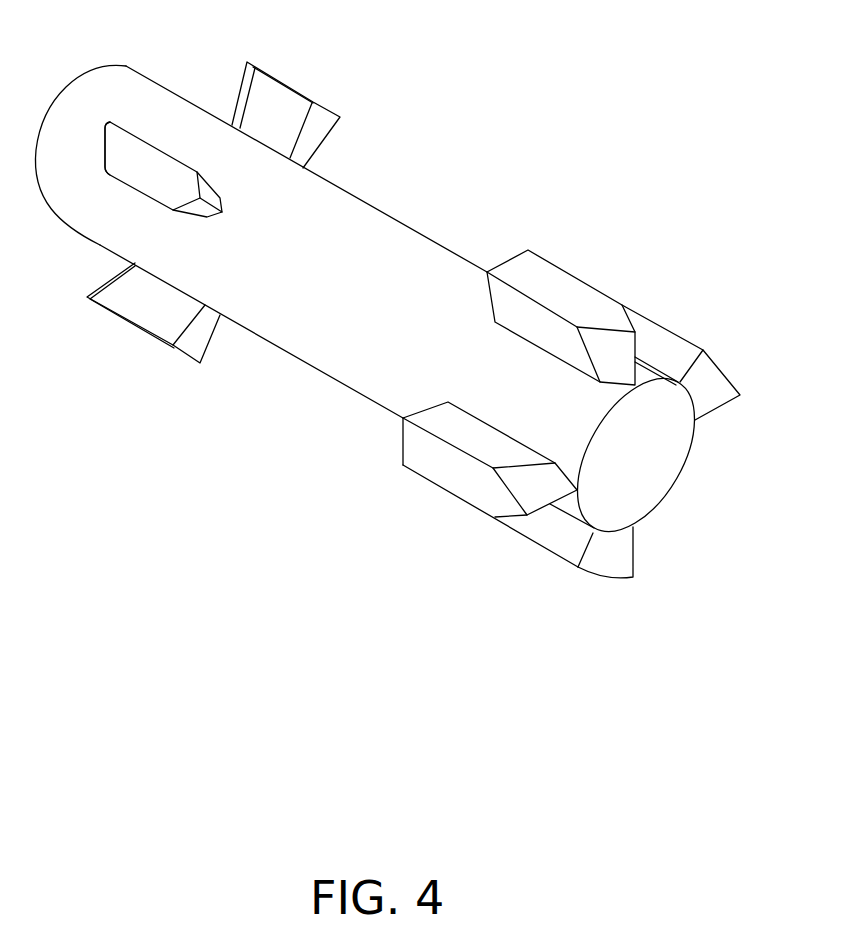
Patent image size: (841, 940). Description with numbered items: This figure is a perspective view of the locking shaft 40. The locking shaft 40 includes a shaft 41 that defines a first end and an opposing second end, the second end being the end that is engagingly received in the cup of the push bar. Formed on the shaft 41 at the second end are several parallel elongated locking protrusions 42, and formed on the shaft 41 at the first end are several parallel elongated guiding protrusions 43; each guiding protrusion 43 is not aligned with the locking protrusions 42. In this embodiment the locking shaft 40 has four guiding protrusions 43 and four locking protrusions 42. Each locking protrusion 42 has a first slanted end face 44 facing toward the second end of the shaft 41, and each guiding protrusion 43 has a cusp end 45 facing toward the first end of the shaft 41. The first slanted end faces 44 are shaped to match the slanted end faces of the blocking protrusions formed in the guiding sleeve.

The locking shaft 40 is at (497, 110).
The shaft 41 is at (373, 250).
The locking protrusion 42 is at (156, 161).
The guiding protrusion 43 is at (558, 292).
The first slanted end face 44 is at (103, 145).
The cusp end 45 is at (618, 352).